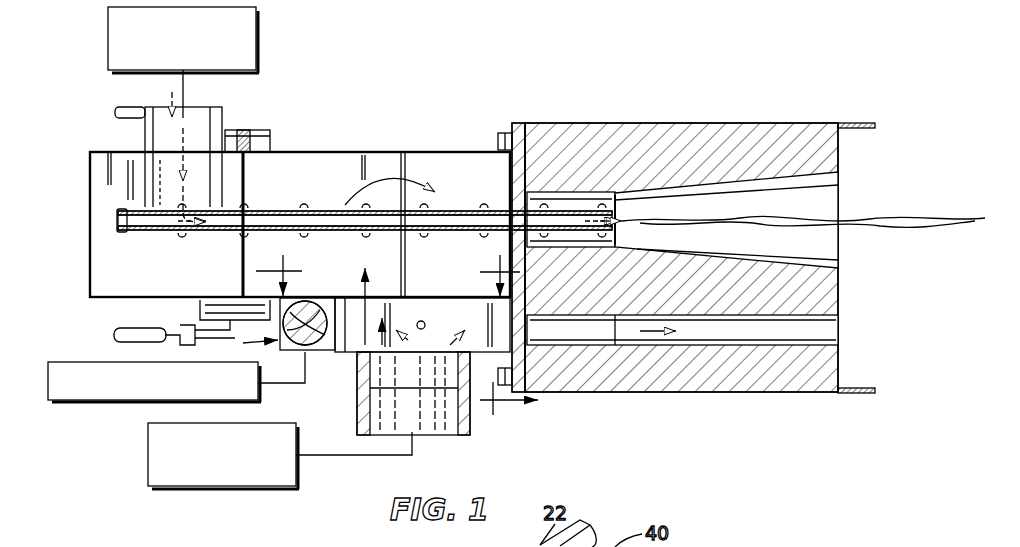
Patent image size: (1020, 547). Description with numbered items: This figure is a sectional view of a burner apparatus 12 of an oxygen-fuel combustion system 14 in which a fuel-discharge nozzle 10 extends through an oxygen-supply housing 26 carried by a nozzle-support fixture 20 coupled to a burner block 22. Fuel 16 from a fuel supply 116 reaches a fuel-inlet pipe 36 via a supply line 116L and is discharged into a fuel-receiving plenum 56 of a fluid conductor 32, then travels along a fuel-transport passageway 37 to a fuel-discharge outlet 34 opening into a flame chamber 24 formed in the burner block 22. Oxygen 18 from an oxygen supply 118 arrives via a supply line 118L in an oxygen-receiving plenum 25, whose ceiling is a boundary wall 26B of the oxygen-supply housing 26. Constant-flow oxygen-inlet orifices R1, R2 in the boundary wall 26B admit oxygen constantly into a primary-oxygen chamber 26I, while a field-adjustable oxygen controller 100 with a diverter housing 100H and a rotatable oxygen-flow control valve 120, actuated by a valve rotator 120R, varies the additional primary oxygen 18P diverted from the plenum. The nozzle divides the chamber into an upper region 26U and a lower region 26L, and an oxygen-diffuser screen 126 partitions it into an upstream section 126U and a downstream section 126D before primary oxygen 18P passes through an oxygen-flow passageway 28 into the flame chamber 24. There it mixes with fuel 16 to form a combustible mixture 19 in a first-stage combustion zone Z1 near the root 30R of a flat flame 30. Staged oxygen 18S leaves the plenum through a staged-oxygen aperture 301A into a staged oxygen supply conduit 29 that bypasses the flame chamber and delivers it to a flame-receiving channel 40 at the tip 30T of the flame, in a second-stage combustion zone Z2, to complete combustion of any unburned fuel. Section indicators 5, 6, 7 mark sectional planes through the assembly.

The fuel-discharge nozzle 10 is at (303, 180).
The burner apparatus 12 is at (530, 106).
The oxygen-fuel combustion system 14 is at (462, 80).
The fuel 16 is at (205, 150).
The oxygen 18 is at (412, 378).
The primary oxygen 18P is at (388, 185).
The staged oxygen 18S is at (820, 333).
The combustible mixture 19 is at (626, 232).
The nozzle-support fixture 20 is at (92, 152).
The burner block 22 is at (716, 124).
The flame chamber 24 is at (814, 188).
The oxygen-receiving plenum 25 is at (375, 380).
The oxygen-supply housing 26 is at (446, 162).
The boundary wall 26B is at (412, 300).
The primary-oxygen chamber 26I is at (455, 180).
The lower region 26L is at (258, 237).
The upper region 26U is at (352, 178).
The oxygen-flow passageway 28 is at (545, 152).
The staged oxygen supply conduit 29 is at (685, 352).
The flame 30 is at (768, 224).
The root 30R is at (658, 225).
The tip 30T is at (862, 220).
The fluid conductor 32 is at (262, 210).
The fuel-discharge outlet 34 is at (618, 228).
The fuel-inlet pipe 36 is at (140, 176).
The fuel-transport passageway 37 is at (458, 232).
The flame-receiving channel 40 is at (867, 162).
The fuel-receiving plenum 56 is at (130, 233).
The field-adjustable oxygen controller 100 is at (100, 410).
The diverter housing 100H is at (300, 385).
The fuel supply 116 is at (258, 30).
The supply line 116L is at (180, 82).
The oxygen supply 118 is at (222, 500).
The supply line 118L is at (330, 452).
The oxygen-flow control valve 120 is at (185, 333).
The valve rotator 120R is at (86, 352).
The oxygen-diffuser screen 126 is at (416, 185).
The downstream section 126D is at (480, 175).
The upstream section 126U is at (287, 182).
The staged-oxygen aperture 301A is at (530, 372).
The section line 5- 5 is at (388, 270).
The section line 6- 6 is at (307, 313).
The section line 7- 7 is at (507, 404).
The constant-flow oxygen-inlet orifice R1 is at (340, 285).
The constant-flow oxygen-inlet orifice R2 is at (390, 290).
The first-stage combustion zone Z1 is at (652, 205).
The second-stage combustion zone Z2 is at (849, 209).